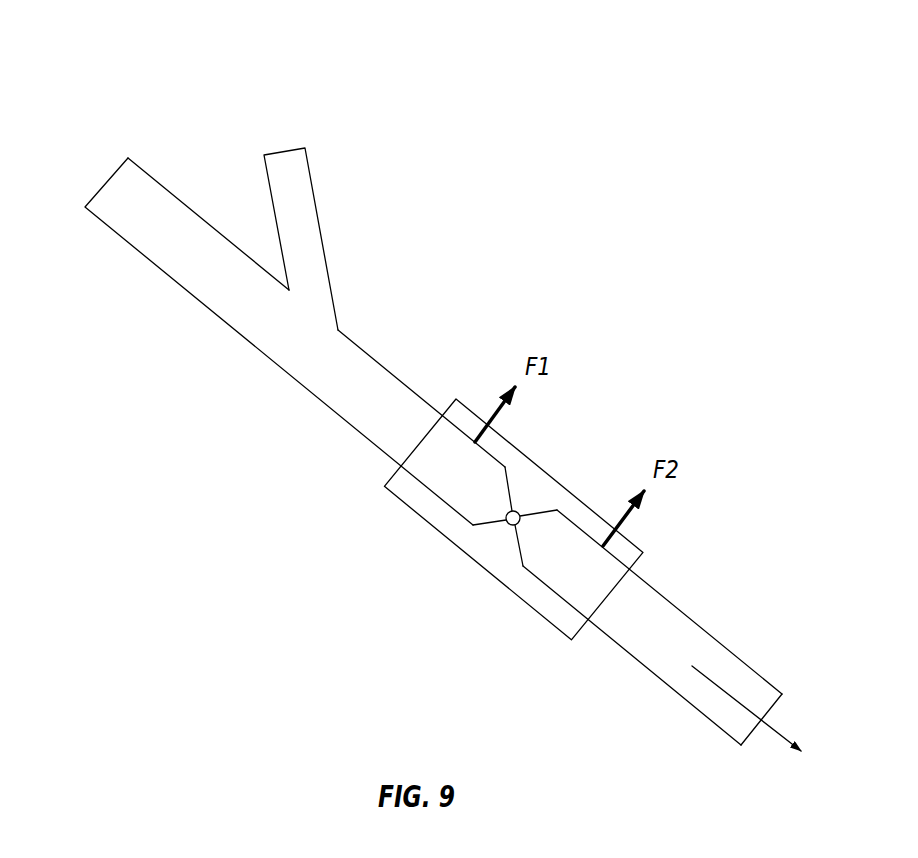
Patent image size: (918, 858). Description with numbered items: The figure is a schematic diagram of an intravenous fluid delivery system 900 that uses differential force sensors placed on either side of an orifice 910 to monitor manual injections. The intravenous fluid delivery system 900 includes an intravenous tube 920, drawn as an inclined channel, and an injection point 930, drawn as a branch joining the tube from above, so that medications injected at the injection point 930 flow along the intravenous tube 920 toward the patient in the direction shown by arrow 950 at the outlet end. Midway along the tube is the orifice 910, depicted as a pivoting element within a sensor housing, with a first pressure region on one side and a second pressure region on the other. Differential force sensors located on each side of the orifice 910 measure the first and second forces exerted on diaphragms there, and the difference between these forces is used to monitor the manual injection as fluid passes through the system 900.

The intravenous fluid delivery system 900 is at (686, 82).
The orifice 910 is at (493, 540).
The intravenous tube 920 is at (122, 202).
The injection point 930 is at (291, 175).
The arrow 950 is at (771, 723).